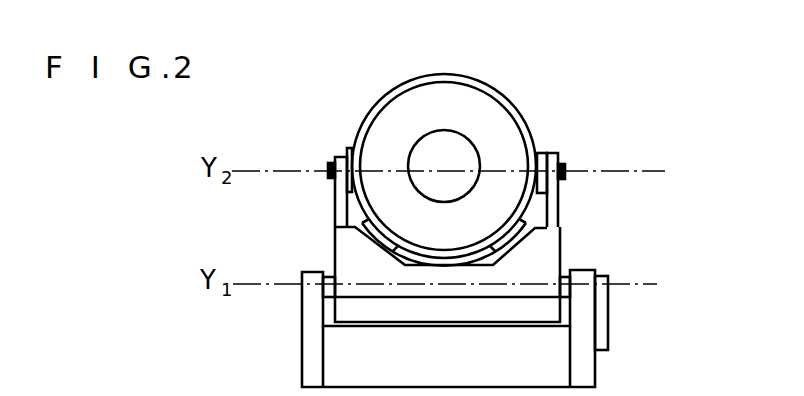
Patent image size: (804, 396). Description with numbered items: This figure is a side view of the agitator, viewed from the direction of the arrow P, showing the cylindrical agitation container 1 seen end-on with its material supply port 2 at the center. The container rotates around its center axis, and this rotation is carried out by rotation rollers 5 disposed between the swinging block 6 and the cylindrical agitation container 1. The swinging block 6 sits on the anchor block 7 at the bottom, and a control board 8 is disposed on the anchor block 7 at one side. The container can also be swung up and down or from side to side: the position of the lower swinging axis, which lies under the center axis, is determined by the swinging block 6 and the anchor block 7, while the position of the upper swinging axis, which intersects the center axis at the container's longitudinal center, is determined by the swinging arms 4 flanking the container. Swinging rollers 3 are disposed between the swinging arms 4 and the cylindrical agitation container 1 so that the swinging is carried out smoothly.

The cylindrical agitation container 1 is at (443, 103).
The material supply port 2 is at (458, 157).
The swinging rollers 3 is at (548, 152).
The swinging arms 4 is at (550, 188).
The rotation rollers 5 is at (543, 218).
The swinging block 6 is at (545, 262).
The anchor block 7 is at (547, 371).
The control board 8 is at (600, 318).